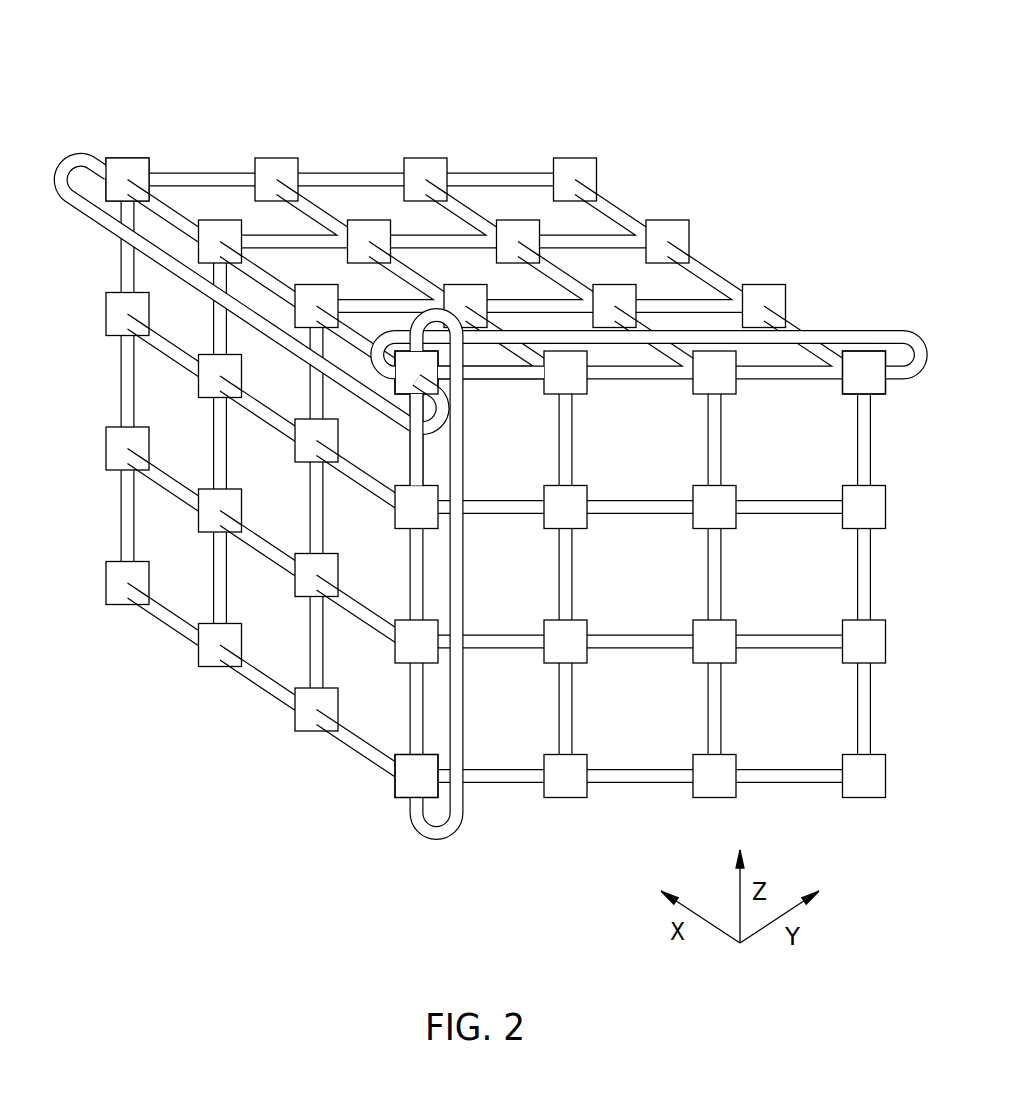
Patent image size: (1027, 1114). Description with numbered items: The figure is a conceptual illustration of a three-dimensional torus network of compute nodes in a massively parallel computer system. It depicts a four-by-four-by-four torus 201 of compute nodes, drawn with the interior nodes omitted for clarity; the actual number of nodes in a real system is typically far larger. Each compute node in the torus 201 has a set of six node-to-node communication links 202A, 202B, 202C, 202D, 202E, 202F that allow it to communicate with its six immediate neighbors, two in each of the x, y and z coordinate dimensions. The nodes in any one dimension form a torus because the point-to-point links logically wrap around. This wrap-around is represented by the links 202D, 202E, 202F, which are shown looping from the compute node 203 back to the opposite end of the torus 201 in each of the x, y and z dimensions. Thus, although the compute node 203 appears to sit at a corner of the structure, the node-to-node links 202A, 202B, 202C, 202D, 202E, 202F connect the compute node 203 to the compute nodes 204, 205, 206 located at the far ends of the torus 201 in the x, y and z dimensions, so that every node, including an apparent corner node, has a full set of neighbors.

The torus 201 is at (650, 80).
The node-to-node communication link 202A is at (488, 381).
The node-to-node communication link 202B is at (425, 462).
The node-to-node communication link 202C is at (362, 337).
The node-to-node communication link 202D is at (889, 329).
The node-to-node communication link 202E is at (435, 839).
The node-to-node communication link 202F is at (78, 156).
The compute node 203 is at (377, 385).
The compute node 204 is at (137, 158).
The compute node 205 is at (888, 387).
The compute node 206 is at (395, 790).